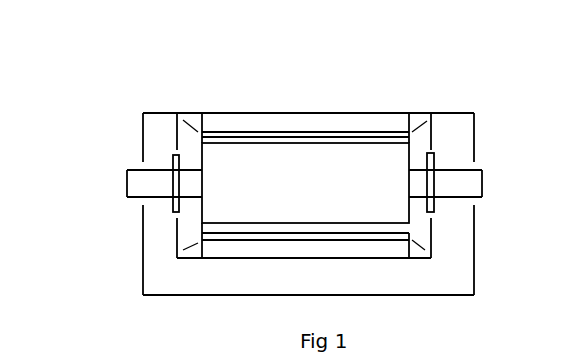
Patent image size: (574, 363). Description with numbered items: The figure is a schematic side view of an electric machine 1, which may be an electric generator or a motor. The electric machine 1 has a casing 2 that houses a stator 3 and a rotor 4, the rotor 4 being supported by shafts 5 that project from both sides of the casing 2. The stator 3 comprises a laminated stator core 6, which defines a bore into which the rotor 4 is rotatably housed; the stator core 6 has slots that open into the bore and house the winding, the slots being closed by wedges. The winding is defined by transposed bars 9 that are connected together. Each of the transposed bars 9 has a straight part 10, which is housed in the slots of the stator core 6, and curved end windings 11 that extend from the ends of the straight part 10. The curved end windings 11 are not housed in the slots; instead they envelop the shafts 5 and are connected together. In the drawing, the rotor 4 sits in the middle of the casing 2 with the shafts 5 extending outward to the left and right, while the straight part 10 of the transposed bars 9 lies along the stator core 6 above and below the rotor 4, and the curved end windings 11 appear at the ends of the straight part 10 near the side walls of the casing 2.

The electric machine 1 is at (90, 72).
The casing 2 is at (142, 137).
The stator 3 is at (230, 110).
The rotor 4 is at (303, 191).
The shafts 5 is at (127, 192).
The laminated stator core 6 is at (290, 113).
The transposed bars 9 is at (352, 240).
The straight part 10 is at (235, 240).
The curved end windings 11 is at (184, 251).